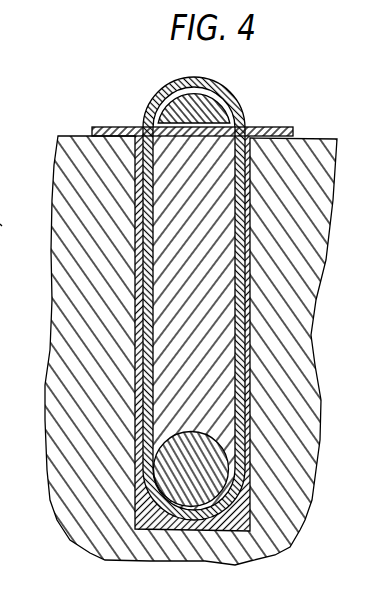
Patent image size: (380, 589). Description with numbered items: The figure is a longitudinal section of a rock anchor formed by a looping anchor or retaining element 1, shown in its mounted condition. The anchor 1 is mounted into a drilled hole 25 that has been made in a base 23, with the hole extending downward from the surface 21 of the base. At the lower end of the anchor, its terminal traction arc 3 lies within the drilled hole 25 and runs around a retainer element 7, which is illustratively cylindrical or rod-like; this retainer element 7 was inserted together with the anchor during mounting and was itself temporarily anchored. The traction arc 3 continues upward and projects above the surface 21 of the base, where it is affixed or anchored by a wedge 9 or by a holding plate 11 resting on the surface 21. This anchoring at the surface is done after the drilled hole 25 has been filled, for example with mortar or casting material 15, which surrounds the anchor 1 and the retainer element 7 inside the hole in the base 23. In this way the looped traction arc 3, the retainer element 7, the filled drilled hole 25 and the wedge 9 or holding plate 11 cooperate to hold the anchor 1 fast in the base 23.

The looping anchor 1 is at (248, 285).
The terminal traction arc 3 is at (229, 96).
The retainer element 7 is at (210, 457).
The wedge 9 is at (189, 98).
The holding plate 11 is at (118, 126).
The mortar or casting material 15 is at (202, 292).
The surface of the base 21 is at (72, 137).
The base 23 is at (98, 328).
The drilled hole 25 is at (140, 517).